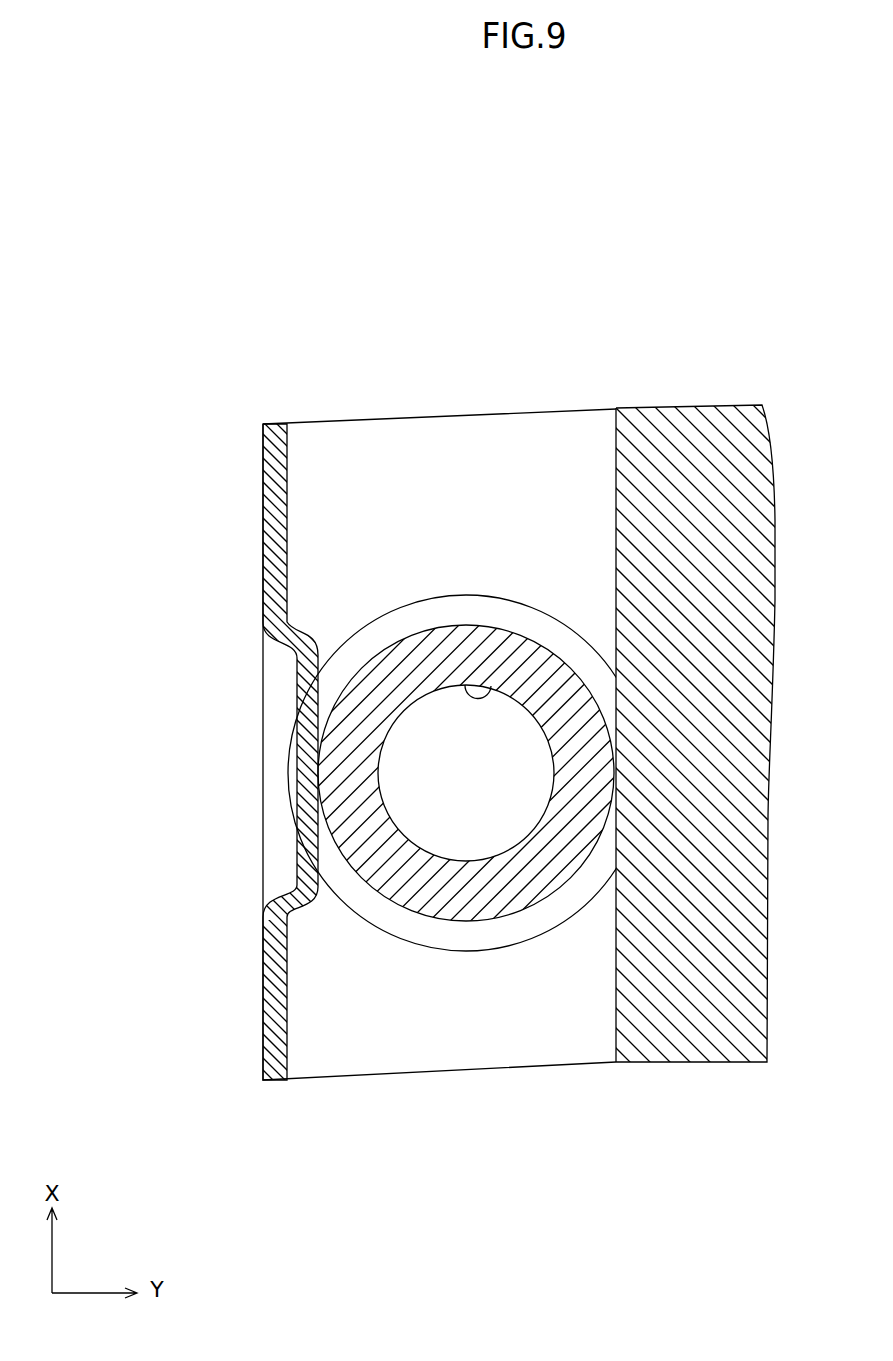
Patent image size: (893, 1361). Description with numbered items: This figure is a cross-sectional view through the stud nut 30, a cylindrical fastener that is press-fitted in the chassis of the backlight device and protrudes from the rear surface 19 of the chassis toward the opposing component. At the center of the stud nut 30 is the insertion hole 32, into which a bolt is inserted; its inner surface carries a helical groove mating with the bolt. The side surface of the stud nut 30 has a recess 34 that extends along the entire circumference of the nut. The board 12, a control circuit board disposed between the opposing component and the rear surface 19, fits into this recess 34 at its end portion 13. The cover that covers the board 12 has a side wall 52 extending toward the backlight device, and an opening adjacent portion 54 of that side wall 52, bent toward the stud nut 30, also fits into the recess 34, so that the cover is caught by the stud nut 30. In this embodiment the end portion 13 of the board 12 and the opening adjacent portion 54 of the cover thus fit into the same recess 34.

The rear surface 19 is at (322, 457).
The board 12 is at (690, 1010).
The end portion 13 is at (630, 808).
The side wall 52 is at (263, 573).
The opening adjacent portion 54 is at (297, 677).
The recess 34 is at (448, 623).
The stud nut 30 is at (400, 662).
The insertion hole 32 is at (482, 697).